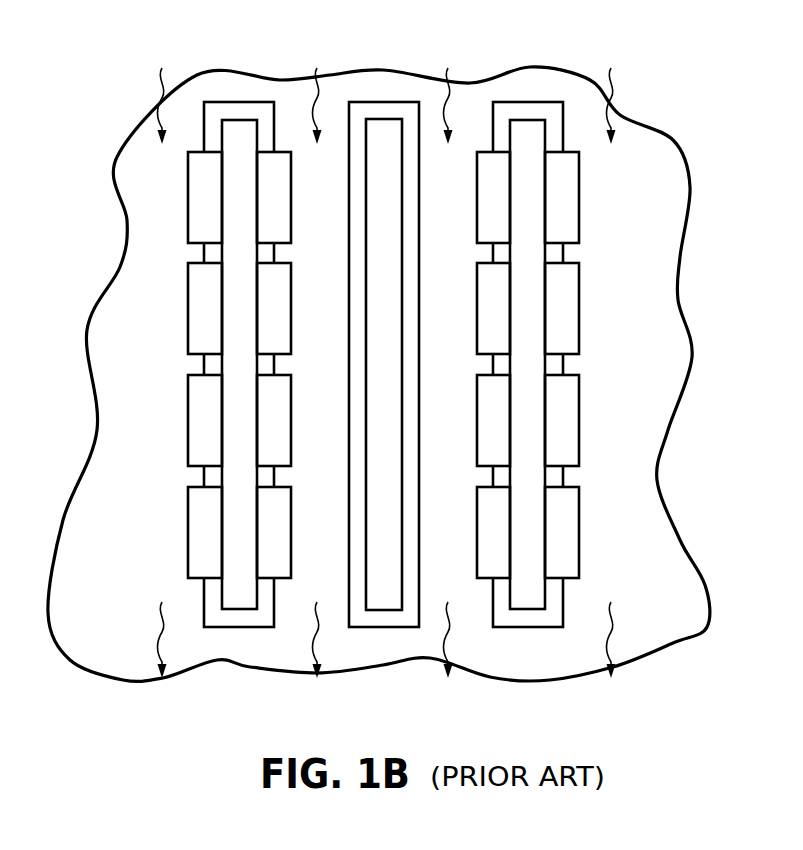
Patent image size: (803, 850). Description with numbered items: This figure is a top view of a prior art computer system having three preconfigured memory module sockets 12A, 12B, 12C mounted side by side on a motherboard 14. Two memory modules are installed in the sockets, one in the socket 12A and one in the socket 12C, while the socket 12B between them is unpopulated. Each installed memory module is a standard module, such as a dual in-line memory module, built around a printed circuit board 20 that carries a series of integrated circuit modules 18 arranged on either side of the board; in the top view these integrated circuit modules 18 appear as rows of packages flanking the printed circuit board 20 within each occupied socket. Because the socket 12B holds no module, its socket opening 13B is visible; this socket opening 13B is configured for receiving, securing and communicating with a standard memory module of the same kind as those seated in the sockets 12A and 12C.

The memory module socket 12A is at (233, 627).
The memory module socket 12B is at (380, 627).
The memory module socket 12C is at (528, 627).
The socket opening 13B is at (386, 133).
The motherboard 14 is at (632, 250).
The integrated circuit module 18 is at (382, 365).
The printed circuit board 20 is at (241, 133).